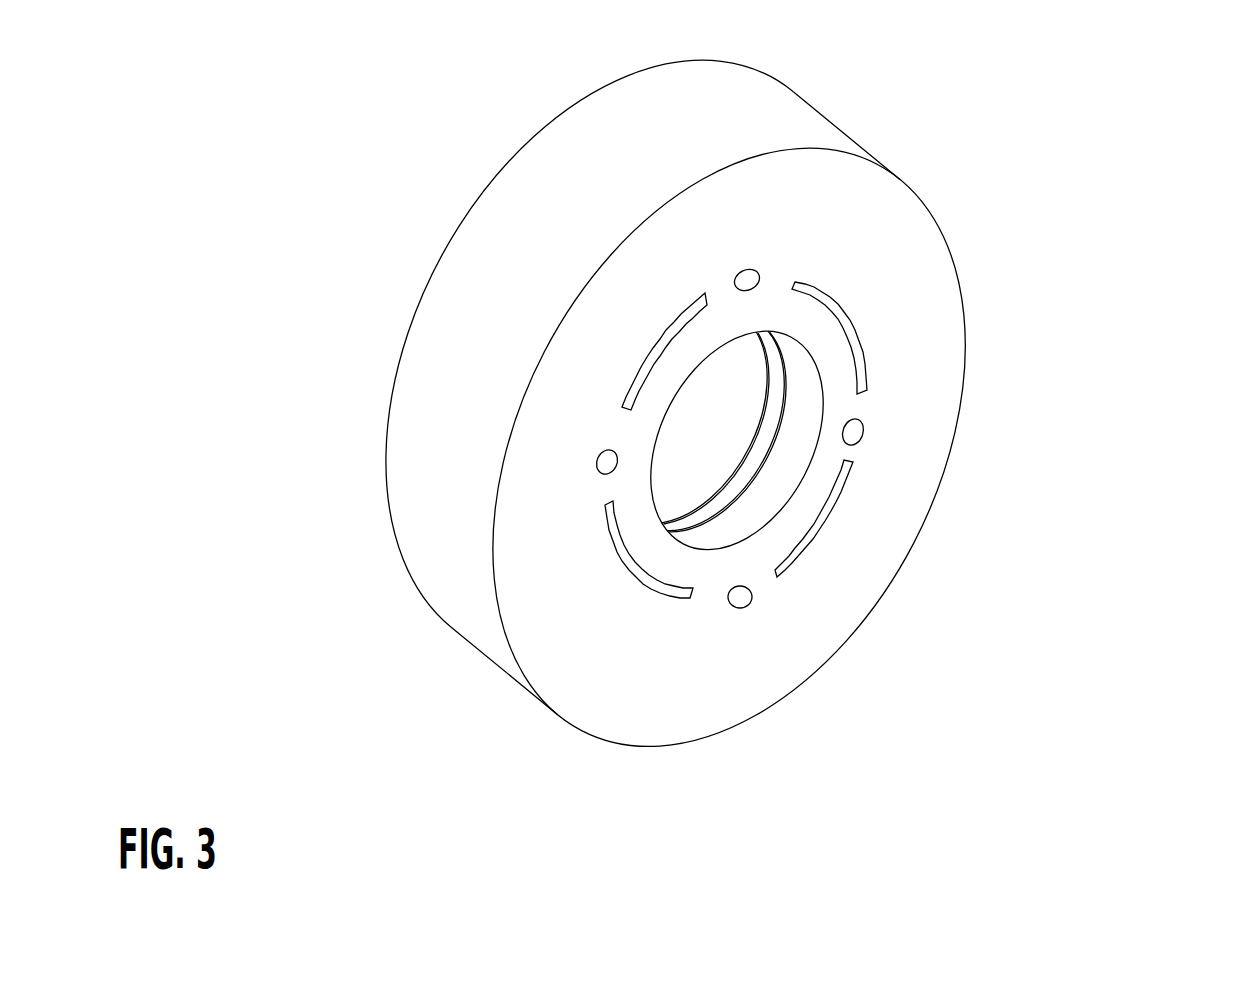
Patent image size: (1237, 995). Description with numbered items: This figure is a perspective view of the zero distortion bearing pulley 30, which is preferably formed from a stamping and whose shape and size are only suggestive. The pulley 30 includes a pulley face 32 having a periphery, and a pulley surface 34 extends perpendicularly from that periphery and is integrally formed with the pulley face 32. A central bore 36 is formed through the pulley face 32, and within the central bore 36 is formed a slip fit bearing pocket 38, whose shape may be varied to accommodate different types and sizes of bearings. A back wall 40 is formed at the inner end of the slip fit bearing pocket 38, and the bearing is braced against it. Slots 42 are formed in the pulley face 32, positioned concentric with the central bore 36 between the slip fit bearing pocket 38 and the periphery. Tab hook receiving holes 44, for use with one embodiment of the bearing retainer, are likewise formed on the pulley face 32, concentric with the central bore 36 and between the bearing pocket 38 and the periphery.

The zero distortion bearing pulley 30 is at (726, 448).
The pulley face 32 is at (931, 269).
The pulley surface 34 is at (448, 597).
The central bore 36 is at (770, 508).
The slip fit bearing pocket 38 is at (777, 482).
The back wall 40 is at (772, 385).
The slots 42 is at (647, 352).
The tab hook receiving holes 44 is at (752, 268).